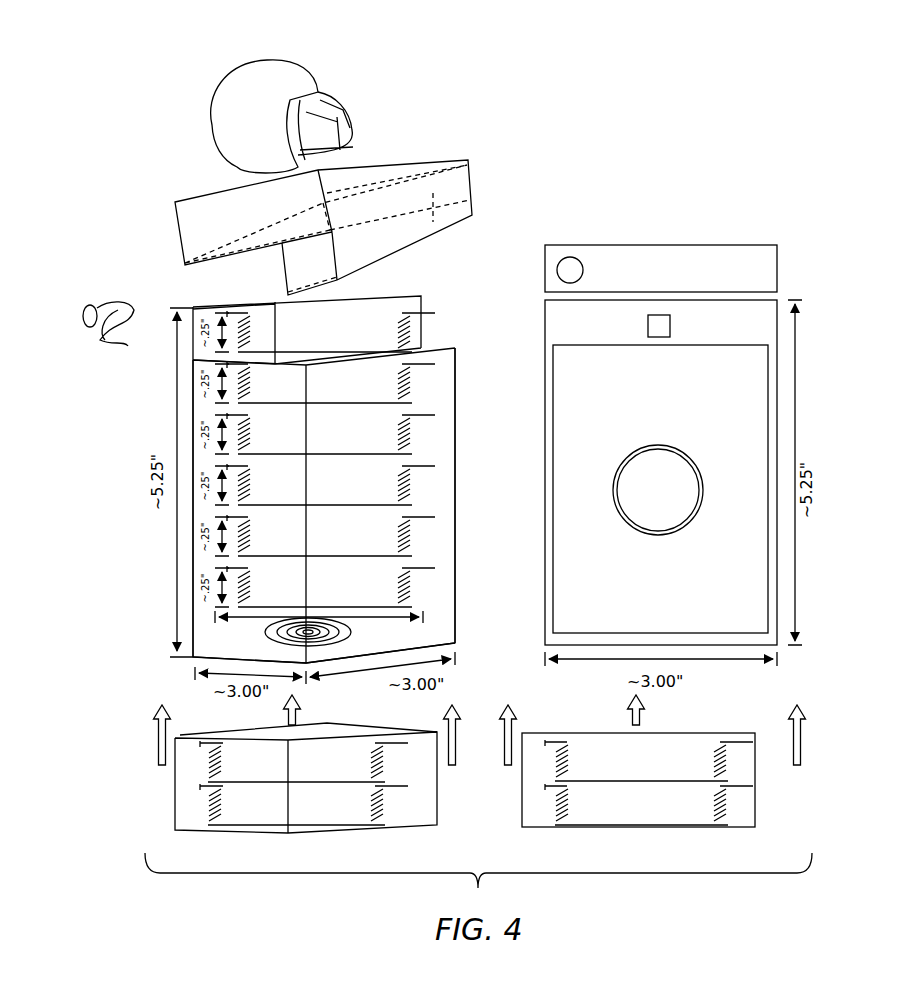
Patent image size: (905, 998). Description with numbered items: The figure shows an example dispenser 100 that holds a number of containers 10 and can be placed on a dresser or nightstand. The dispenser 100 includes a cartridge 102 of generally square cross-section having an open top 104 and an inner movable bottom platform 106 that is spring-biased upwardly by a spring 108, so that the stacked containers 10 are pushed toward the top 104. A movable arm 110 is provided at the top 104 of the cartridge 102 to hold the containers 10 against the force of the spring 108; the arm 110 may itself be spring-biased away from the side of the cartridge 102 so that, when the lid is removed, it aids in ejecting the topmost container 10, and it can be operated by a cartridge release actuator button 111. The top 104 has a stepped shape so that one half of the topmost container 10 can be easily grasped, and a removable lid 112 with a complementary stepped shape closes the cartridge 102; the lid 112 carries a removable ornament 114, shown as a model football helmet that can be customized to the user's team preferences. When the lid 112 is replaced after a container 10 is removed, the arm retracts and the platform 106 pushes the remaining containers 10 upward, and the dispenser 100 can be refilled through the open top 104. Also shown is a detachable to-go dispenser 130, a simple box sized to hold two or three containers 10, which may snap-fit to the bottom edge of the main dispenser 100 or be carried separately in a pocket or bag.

The container 10 is at (432, 392).
The dispenser 100 is at (122, 438).
The cartridge 102 is at (187, 657).
The open top 104 is at (435, 328).
The inner movable bottom platform 106 is at (395, 637).
The spring 108 is at (332, 650).
The movable arm 110 is at (130, 310).
The cartridge release actuator button 111 is at (688, 522).
The removable lid 112 is at (463, 127).
The removable ornament 114 is at (290, 78).
The detachable to-go dispenser 130 is at (393, 828).